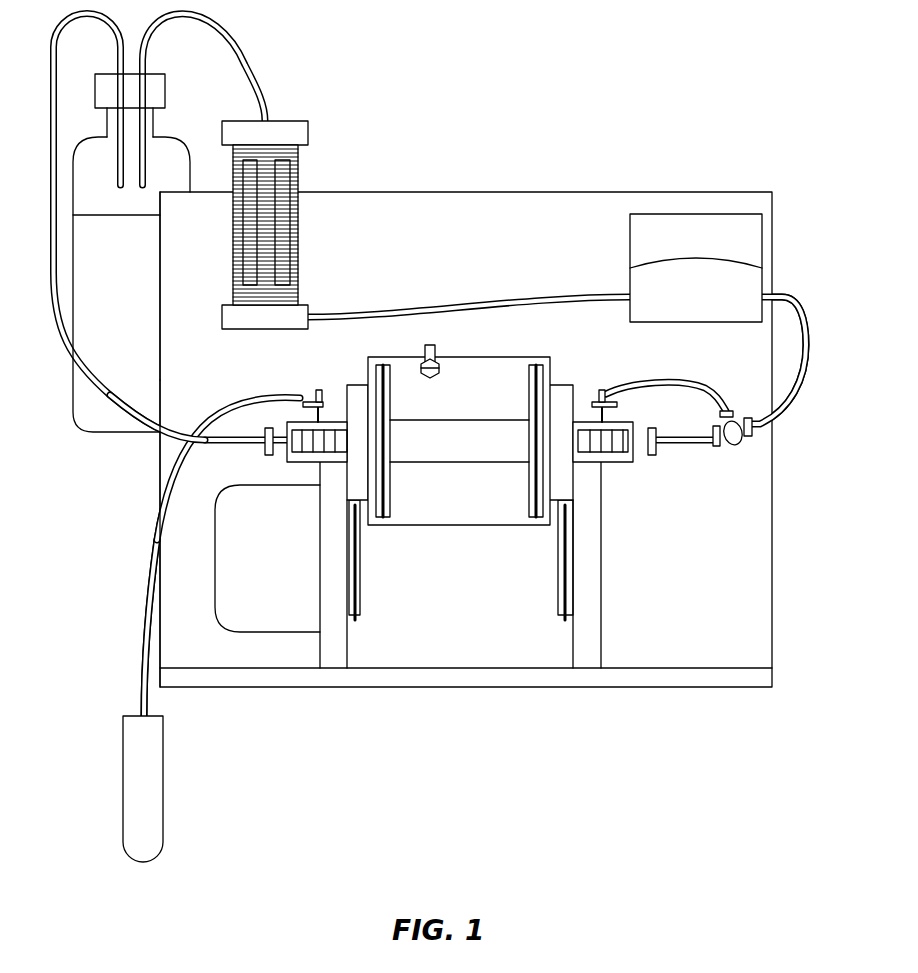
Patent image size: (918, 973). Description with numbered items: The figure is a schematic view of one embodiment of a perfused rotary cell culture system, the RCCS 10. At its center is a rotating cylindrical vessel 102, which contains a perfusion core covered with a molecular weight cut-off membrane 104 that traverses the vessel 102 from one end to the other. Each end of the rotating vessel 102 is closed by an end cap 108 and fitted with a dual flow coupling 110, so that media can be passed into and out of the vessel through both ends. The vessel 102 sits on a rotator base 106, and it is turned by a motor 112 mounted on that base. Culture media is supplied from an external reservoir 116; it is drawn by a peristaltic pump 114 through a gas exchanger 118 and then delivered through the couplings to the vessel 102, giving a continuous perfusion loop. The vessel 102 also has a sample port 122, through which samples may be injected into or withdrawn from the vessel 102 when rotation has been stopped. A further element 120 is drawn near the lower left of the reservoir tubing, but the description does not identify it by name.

The RCCS 10 is at (592, 65).
The rotating cylindrical vessel 102 is at (422, 527).
The molecular weight cut-off membrane 104 is at (487, 462).
The rotator base 106 is at (776, 604).
The end cap 108 is at (357, 385).
The dual flow coupling 110 is at (618, 462).
The motor 112 is at (272, 632).
The peristaltic pump 114 is at (713, 213).
The external reservoir 116 is at (125, 433).
The gas exchanger 118 is at (297, 120).
The probe 120 is at (167, 778).
The sample port 122 is at (434, 347).